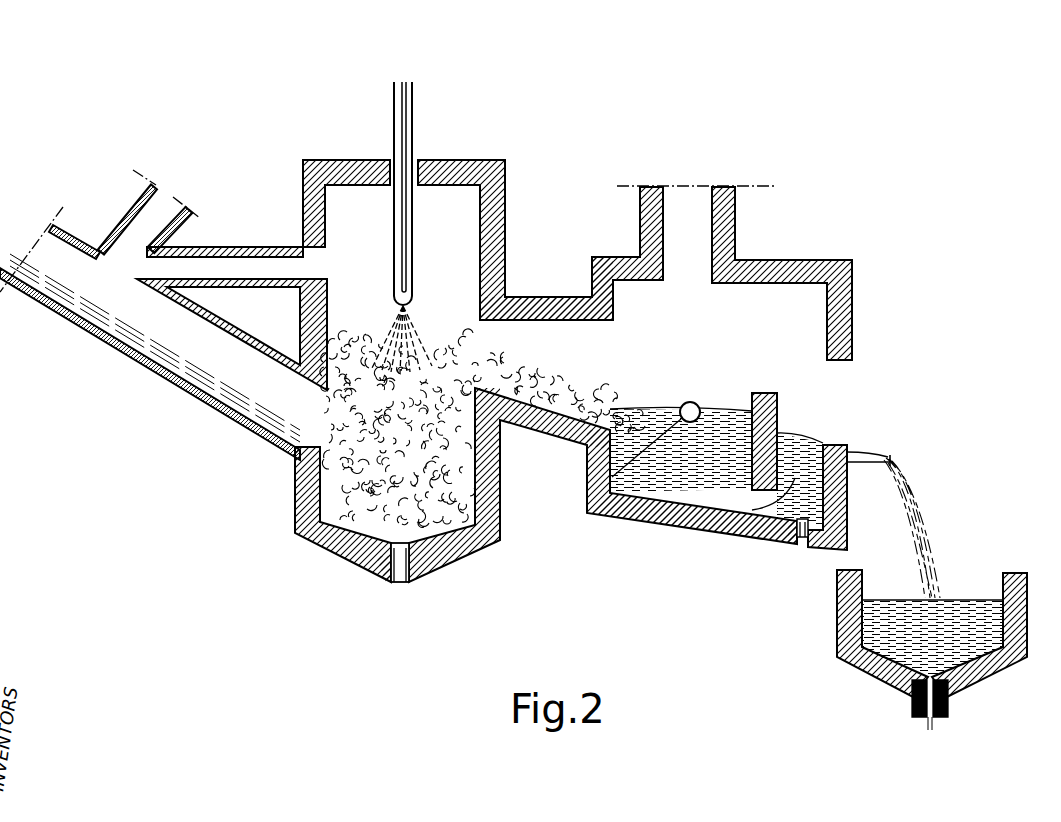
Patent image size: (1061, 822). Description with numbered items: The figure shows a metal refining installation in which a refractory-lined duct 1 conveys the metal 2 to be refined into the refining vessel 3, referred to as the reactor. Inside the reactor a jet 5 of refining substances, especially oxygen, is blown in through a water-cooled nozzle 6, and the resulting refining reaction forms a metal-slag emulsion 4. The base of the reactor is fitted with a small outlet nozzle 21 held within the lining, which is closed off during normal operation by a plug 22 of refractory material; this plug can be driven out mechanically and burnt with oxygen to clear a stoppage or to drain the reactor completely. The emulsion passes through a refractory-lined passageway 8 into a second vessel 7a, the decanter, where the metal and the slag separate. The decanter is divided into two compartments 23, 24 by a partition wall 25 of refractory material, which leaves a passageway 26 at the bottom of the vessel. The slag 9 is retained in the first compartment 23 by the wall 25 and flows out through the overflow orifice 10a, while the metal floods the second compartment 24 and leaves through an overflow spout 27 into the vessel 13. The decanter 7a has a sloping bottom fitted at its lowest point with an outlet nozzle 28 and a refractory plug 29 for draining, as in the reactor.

The refractory-lined duct 1 is at (247, 353).
The metal 2 is at (140, 350).
The refining vessel 3 is at (447, 218).
The metal-slag emulsion 4 is at (297, 537).
The jet 5 is at (417, 323).
The nozzle 6 is at (403, 120).
The second vessel 7a is at (773, 325).
The refractory-lined passageway 8 is at (535, 332).
The slag 9 is at (587, 443).
The overflow orifice 10a is at (587, 490).
The vessel 13 is at (837, 637).
The small outlet nozzle 21 is at (367, 570).
The plug 22 is at (397, 573).
The compartment 23 is at (660, 480).
The compartment 24 is at (745, 535).
The partition wall 25 is at (777, 407).
The passageway 26 is at (693, 520).
The overflow spout 27 is at (878, 453).
The outlet nozzle 28 is at (790, 540).
The plug 29 is at (802, 537).